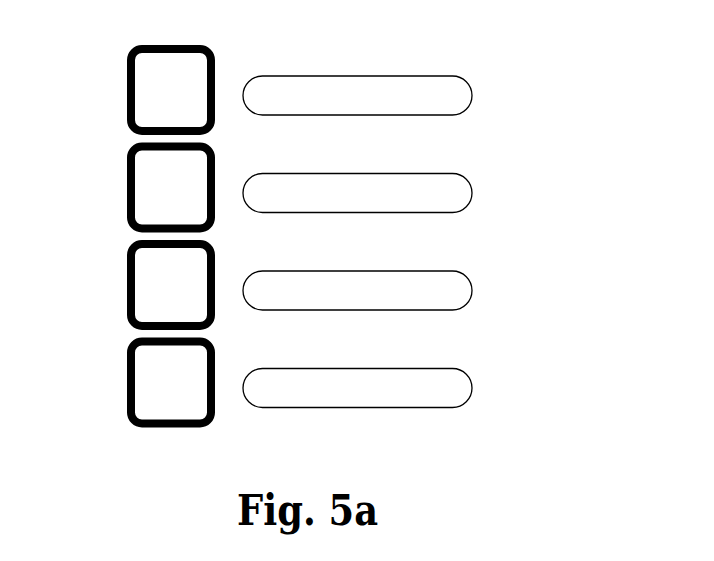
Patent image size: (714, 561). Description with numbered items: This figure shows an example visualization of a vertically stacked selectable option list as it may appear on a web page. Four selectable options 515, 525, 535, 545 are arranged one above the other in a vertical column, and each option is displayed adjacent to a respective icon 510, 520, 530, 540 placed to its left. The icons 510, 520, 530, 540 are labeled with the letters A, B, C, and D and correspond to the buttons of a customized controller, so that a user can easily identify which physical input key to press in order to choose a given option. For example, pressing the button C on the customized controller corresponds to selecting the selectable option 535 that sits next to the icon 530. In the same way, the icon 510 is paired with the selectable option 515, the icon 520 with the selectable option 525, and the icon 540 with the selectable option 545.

The icon 510 is at (142, 88).
The selectable option 515 is at (438, 92).
The icon 520 is at (142, 186).
The selectable option 525 is at (438, 190).
The icon 530 is at (142, 283).
The selectable option 535 is at (438, 287).
The icon 540 is at (142, 380).
The selectable option 545 is at (438, 384).